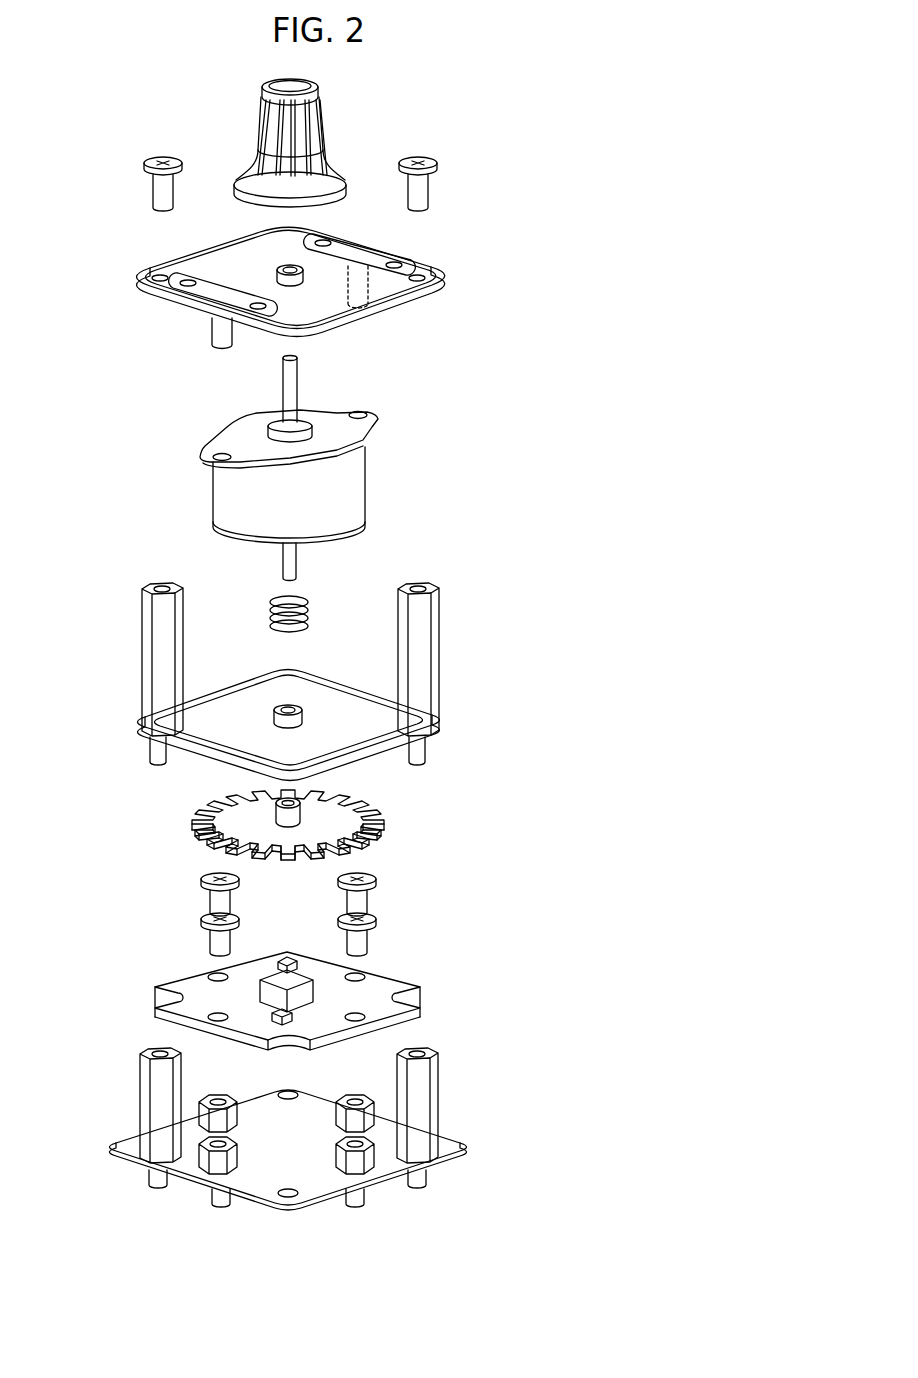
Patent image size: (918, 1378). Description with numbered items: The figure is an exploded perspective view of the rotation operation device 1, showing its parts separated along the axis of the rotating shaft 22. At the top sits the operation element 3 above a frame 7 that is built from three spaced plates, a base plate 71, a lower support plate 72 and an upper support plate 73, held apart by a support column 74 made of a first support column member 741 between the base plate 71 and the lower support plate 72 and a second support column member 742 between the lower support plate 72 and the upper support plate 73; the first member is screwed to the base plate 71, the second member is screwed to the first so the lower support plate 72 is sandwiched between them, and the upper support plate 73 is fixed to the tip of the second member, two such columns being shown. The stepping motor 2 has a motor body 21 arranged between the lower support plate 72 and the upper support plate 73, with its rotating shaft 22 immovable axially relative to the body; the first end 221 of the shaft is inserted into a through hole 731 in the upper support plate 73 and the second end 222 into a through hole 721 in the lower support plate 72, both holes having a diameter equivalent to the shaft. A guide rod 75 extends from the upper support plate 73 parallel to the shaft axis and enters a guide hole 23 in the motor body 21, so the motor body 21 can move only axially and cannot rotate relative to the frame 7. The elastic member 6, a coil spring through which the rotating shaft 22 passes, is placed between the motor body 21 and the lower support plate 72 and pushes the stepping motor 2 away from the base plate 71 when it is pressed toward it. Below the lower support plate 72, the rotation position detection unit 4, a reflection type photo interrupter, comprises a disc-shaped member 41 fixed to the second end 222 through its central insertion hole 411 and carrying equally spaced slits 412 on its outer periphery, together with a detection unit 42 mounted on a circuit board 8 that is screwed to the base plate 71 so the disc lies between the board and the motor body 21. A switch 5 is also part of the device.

The rotation operation device 1 is at (496, 154).
The stepping motor 2 is at (203, 493).
The motor body 21 is at (358, 472).
The rotating shaft 22 is at (274, 393).
The first end 221 is at (298, 372).
The second end 222 is at (297, 563).
The guide hole 23 is at (375, 400).
The operation element 3 is at (326, 110).
The rotation position detection unit 4 is at (192, 855).
The disc-shaped member 41 is at (191, 820).
The insertion hole 411 is at (300, 793).
The slits 412 is at (365, 855).
The detection unit 42 is at (299, 965).
The switch 5 is at (264, 989).
The elastic member 6 is at (268, 600).
The frame 7 is at (124, 261).
The base plate 71 is at (474, 1145).
The lower support plate 72 is at (448, 722).
The through hole 721 is at (290, 699).
The upper support plate 73 is at (459, 280).
The through hole 731 is at (275, 260).
The support column 74 is at (322, 873).
The first support column member 741 is at (158, 1082).
The second support column member 742 is at (158, 643).
The guide rod 75 is at (212, 331).
The circuit board 8 is at (423, 985).